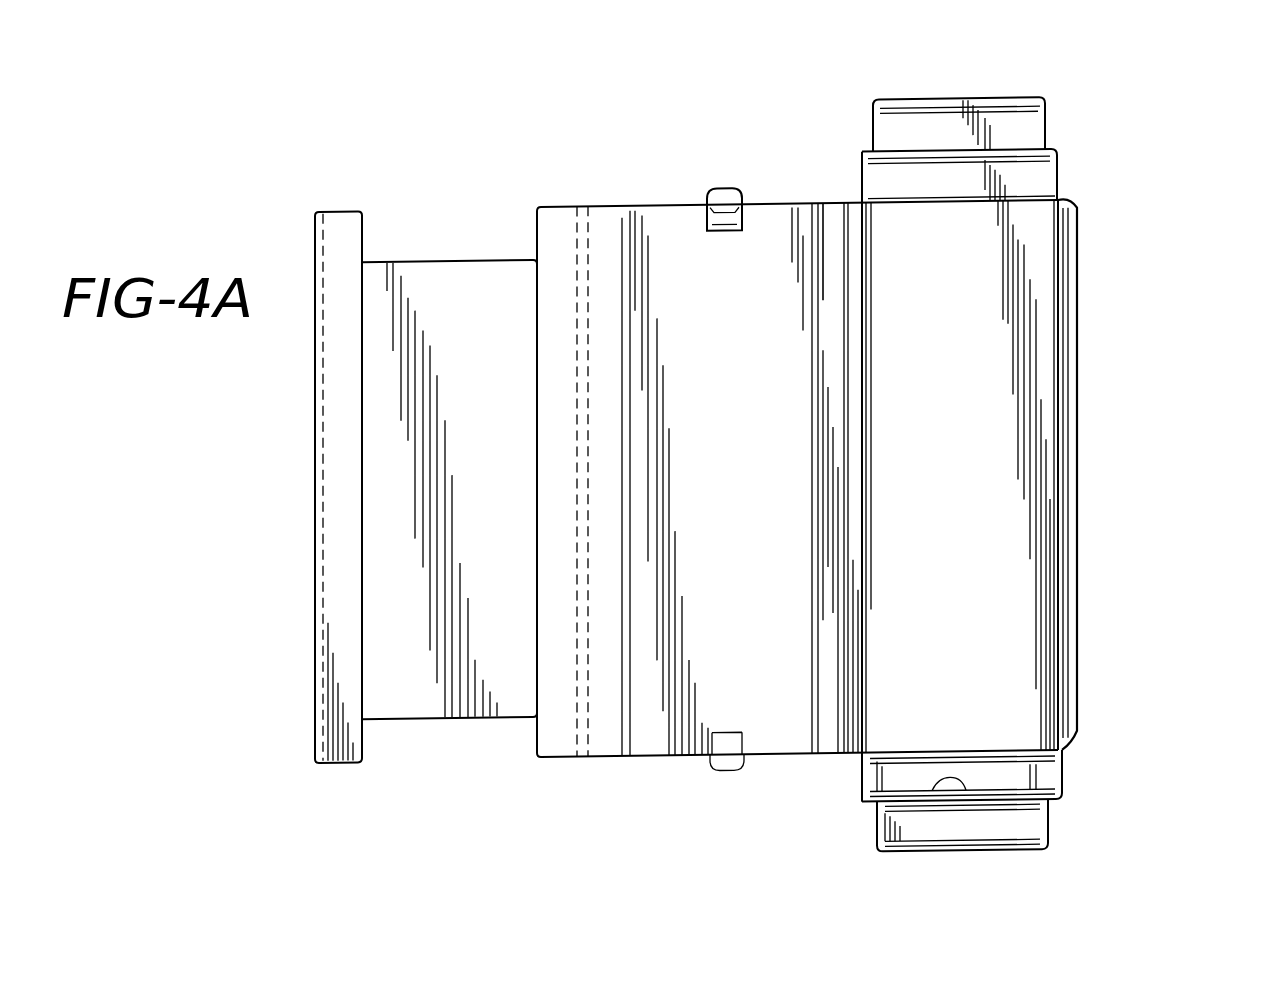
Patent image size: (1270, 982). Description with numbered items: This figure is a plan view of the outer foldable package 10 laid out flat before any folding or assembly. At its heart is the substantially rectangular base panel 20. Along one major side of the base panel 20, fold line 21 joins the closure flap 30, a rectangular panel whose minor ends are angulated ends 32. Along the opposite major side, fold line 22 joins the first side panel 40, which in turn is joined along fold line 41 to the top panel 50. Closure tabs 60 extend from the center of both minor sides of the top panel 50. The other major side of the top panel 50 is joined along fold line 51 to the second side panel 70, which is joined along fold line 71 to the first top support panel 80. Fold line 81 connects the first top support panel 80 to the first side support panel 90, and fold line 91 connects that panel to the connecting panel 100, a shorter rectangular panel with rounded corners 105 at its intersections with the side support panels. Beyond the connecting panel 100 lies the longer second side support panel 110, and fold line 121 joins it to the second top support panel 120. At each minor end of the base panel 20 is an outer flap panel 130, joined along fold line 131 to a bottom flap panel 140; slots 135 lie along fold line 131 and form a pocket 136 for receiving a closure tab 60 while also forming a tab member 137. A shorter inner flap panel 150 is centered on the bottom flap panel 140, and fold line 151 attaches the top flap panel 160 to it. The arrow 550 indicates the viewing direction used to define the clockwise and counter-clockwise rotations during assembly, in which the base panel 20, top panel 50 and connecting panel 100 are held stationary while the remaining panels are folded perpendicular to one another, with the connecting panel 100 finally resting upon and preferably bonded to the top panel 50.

The outer foldable package 10 is at (1165, 440).
The base panel 20 is at (1013, 657).
The fold line 21 is at (1065, 200).
The fold line 22 is at (855, 760).
The closure flap 30 is at (1067, 340).
The angulated minor ends 32 is at (1075, 203).
The first side panel 40 is at (842, 745).
The fold line 41 is at (823, 215).
The top panel 50 is at (752, 477).
The fold line 51 is at (626, 758).
The closure tabs 60 is at (726, 190).
The second side panel 70 is at (608, 222).
The fold line 71 is at (585, 758).
The first top support panel 80 is at (578, 225).
The fold line 81 is at (578, 760).
The first side support panel 90 is at (558, 233).
The fold line 91 is at (538, 250).
The connecting panel 100 is at (500, 470).
The rounded corners 105 is at (533, 256).
The second side support panel 110 is at (350, 735).
The second top support panel 120 is at (313, 585).
The fold line 121 is at (317, 211).
The outer flap panel 130 is at (1060, 178).
The fold line 131 is at (1060, 160).
The slots 135 is at (953, 790).
The pocket 136 is at (975, 790).
The tab member 137 is at (932, 790).
The bottom flap panel 140 is at (862, 156).
The inner flap panel 150 is at (1045, 832).
The fold line 151 is at (1053, 113).
The top flap panel 160 is at (1040, 100).
The arrow 550 is at (677, 772).